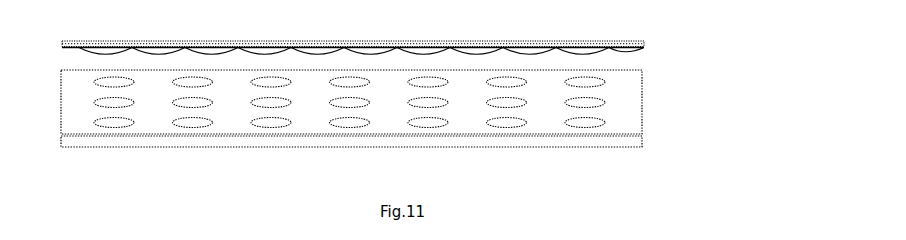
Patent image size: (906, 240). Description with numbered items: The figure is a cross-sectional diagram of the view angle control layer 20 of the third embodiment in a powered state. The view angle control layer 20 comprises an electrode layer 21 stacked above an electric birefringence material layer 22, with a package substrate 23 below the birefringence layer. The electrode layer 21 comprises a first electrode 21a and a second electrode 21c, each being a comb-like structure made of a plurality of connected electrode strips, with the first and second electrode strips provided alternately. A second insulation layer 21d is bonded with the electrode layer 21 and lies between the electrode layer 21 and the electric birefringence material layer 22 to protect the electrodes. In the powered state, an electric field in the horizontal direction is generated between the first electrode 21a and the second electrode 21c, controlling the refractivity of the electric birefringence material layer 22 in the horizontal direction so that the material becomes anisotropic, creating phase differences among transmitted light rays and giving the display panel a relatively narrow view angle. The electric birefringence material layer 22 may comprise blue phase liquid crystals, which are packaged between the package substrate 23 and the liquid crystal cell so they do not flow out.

The view angle control layer 20 is at (404, 96).
The electrode layer 21 is at (405, 51).
The second electrode 21c is at (567, 42).
The second insulation layer 21d is at (644, 47).
The first electrode 21a is at (617, 48).
The electric birefringence material layer 22 is at (633, 111).
The package substrate 23 is at (643, 141).